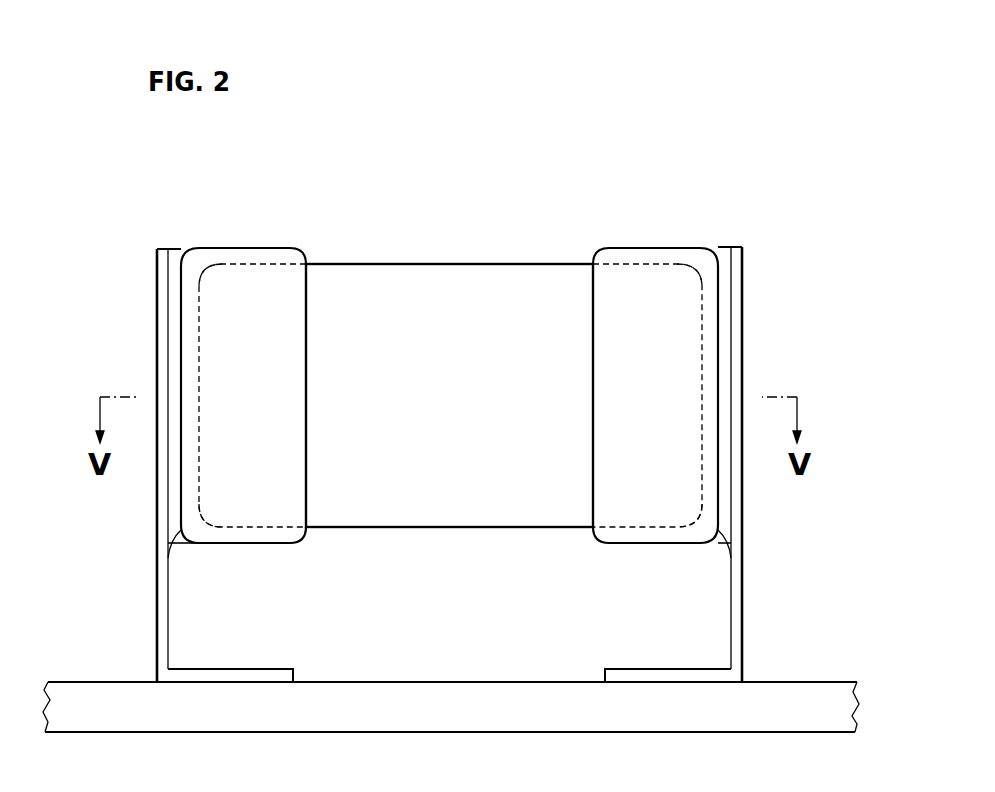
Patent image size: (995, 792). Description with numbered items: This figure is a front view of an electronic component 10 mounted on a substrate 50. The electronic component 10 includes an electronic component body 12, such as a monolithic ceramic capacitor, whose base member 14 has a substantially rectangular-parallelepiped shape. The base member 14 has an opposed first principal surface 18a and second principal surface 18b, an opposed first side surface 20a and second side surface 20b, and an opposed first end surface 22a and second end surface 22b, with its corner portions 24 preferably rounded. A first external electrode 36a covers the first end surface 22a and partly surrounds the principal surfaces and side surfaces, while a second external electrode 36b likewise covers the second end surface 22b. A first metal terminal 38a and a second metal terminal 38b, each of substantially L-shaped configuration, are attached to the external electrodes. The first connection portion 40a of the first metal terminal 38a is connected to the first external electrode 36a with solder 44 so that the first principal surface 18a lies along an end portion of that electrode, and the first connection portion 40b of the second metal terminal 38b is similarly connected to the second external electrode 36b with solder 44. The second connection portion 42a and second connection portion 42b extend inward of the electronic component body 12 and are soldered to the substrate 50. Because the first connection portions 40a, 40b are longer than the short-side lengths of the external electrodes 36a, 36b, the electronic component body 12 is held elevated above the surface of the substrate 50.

The electronic component 10 is at (451, 243).
The electronic component body 12 is at (340, 263).
The base member 14 is at (387, 263).
The first principal surface 18a is at (507, 262).
The second principal surface 18b is at (505, 528).
The first side surface 20a is at (375, 480).
The second side surface 20b is at (427, 480).
The first end surface 22a is at (199, 352).
The second end surface 22b is at (702, 352).
The corner portions 24 is at (205, 268).
The first external electrode 36a is at (250, 247).
The second external electrode 36b is at (637, 247).
The first metal terminal 38a is at (155, 258).
The second metal terminal 38b is at (745, 256).
The first connection portion 40a is at (166, 326).
The first connection portion 40b is at (737, 325).
The second connection portion 42a is at (255, 669).
The second connection portion 42b is at (630, 668).
The solder 44 is at (168, 558).
The substrate 50 is at (98, 682).